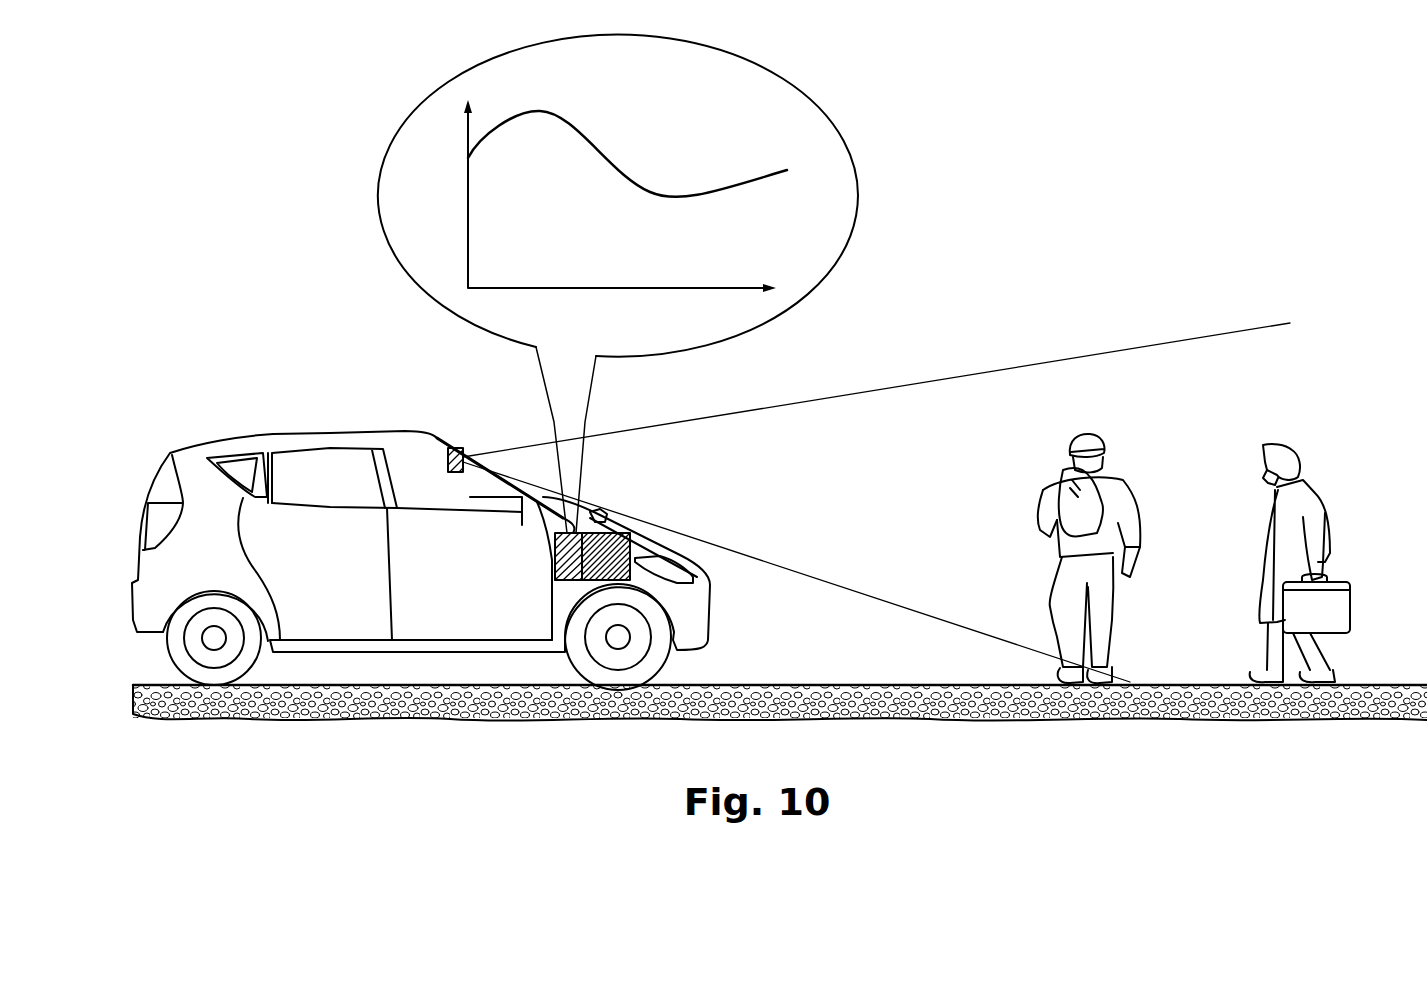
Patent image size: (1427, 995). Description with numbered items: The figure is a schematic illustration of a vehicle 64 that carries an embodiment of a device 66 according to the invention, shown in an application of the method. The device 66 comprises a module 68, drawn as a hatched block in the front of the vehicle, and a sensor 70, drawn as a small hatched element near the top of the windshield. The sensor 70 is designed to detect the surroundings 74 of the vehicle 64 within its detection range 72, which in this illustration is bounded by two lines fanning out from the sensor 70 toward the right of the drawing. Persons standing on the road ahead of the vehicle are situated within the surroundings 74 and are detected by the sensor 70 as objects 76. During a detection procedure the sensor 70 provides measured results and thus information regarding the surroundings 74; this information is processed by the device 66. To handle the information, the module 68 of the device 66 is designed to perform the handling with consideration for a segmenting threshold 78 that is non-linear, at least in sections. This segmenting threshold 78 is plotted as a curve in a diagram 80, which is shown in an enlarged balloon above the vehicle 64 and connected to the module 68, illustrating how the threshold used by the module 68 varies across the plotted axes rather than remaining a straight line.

The vehicle 64 is at (363, 692).
The device 66 is at (547, 585).
The module 68 is at (568, 565).
The sensor 70 is at (447, 452).
The detection range 72 is at (943, 378).
The surroundings 74 is at (1358, 408).
The objects 76 is at (1258, 440).
The segmenting threshold 78 is at (631, 174).
The diagram 80 is at (418, 180).